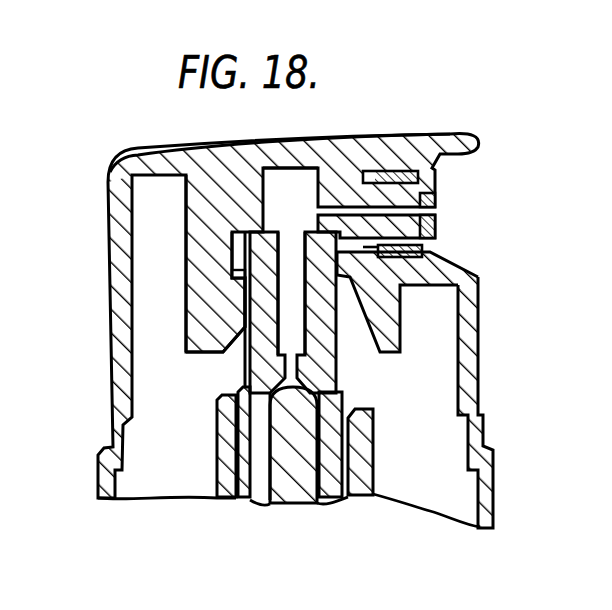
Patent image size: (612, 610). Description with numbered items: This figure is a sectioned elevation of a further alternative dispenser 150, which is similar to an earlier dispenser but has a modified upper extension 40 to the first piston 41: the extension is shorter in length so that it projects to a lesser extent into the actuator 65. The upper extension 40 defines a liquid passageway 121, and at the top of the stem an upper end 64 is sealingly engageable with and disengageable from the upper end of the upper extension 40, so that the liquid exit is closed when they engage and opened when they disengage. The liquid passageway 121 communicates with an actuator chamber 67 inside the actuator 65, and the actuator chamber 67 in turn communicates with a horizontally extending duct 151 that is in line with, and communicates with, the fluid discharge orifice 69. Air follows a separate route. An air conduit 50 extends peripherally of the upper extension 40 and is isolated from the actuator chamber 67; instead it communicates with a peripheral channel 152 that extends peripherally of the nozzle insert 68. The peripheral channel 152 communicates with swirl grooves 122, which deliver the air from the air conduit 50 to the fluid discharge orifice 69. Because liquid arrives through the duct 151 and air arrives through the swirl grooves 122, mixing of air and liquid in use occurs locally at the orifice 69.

The dispenser 150 is at (96, 176).
The actuator 65 is at (150, 136).
The actuator chamber 67 is at (282, 190).
The liquid passageway 121 is at (294, 290).
The horizontally extending duct 151 is at (340, 208).
The nozzle insert 68 is at (399, 147).
The fluid discharge orifice 69 is at (438, 208).
The swirl grooves 122 is at (438, 234).
The peripheral channel 152 is at (400, 288).
The upper extension 40 is at (400, 317).
The air conduit 50 is at (218, 415).
The upper end 64 is at (297, 408).
The first piston 41 is at (333, 440).